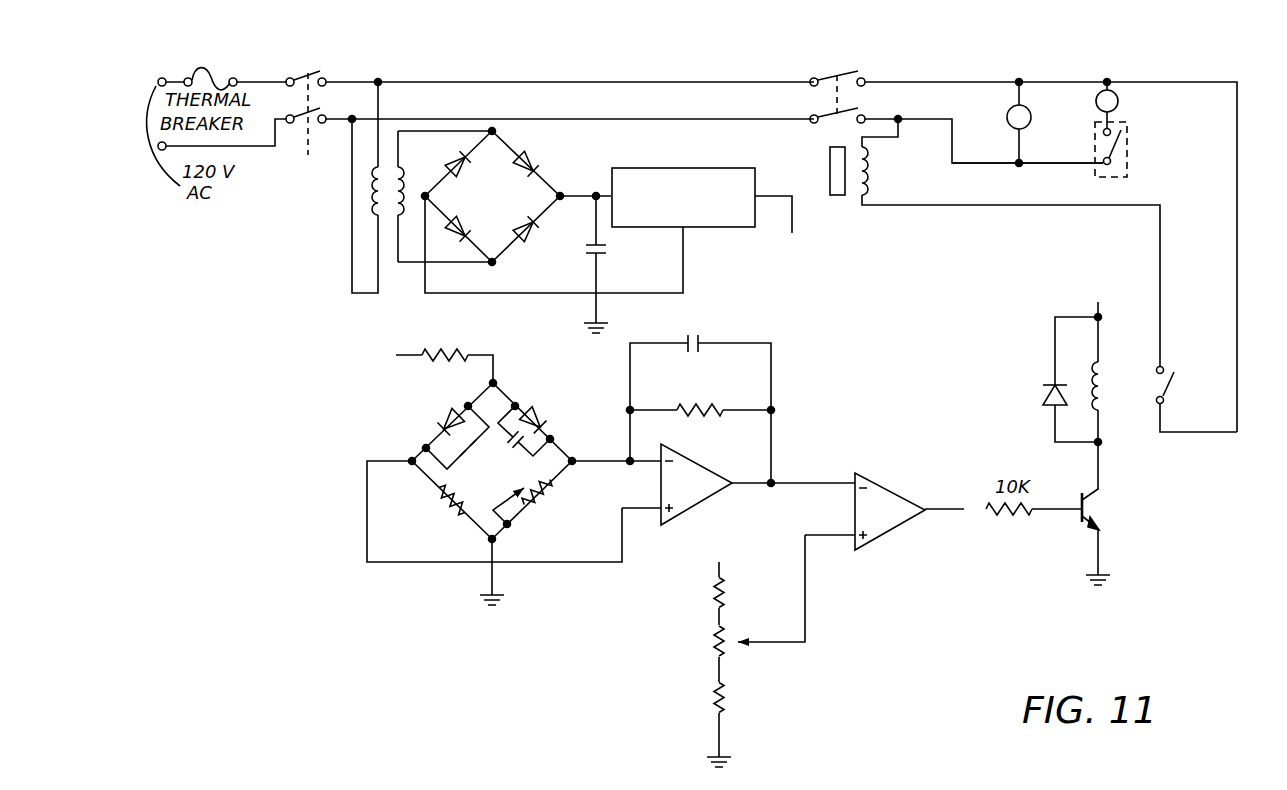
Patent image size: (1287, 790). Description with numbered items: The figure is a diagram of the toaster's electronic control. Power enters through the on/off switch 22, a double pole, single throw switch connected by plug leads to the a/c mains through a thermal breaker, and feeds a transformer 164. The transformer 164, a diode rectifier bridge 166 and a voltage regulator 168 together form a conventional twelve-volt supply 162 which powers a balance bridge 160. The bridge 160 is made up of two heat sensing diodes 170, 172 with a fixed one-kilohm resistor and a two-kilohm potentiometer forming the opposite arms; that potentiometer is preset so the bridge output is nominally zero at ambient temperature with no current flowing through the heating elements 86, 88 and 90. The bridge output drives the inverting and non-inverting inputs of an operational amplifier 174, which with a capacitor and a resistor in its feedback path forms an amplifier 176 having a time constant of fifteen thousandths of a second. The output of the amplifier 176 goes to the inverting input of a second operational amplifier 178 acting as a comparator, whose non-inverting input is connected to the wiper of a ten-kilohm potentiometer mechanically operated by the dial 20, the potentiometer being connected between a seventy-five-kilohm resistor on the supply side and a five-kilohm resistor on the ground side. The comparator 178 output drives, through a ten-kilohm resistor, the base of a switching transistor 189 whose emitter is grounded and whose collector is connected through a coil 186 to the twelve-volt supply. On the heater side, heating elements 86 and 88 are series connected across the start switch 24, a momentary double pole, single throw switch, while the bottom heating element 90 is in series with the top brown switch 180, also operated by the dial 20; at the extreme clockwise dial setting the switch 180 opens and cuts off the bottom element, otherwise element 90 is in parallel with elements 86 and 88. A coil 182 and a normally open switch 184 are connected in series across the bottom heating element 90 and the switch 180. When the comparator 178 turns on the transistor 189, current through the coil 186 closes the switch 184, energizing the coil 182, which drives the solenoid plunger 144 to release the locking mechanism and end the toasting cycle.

The dial 20 is at (678, 619).
The on/off switch 22 is at (349, 66).
The start switch 24 is at (876, 72).
The heating element 86 is at (984, 164).
The heating element 88 is at (1031, 117).
The bottom heating element 90 is at (1096, 93).
The solenoid plunger 144 is at (829, 165).
The balance bridge 160 is at (487, 462).
The +12 volt supply 162 is at (540, 229).
The transformer 164 is at (389, 220).
The diode rectifier bridge 166 is at (521, 250).
The voltage regulator 168 is at (742, 223).
The heat sensing diode 170 is at (436, 437).
The heat sensing diode 172 is at (533, 413).
The operational amplifier 174 is at (695, 500).
The amplifier 176 is at (782, 462).
The operational amplifier 178 is at (894, 499).
The top brown switch 180 is at (1118, 178).
The coil 182 is at (871, 178).
The switch 184 is at (1178, 383).
The coil 186 is at (1102, 372).
The switching transistor 189 is at (1094, 504).